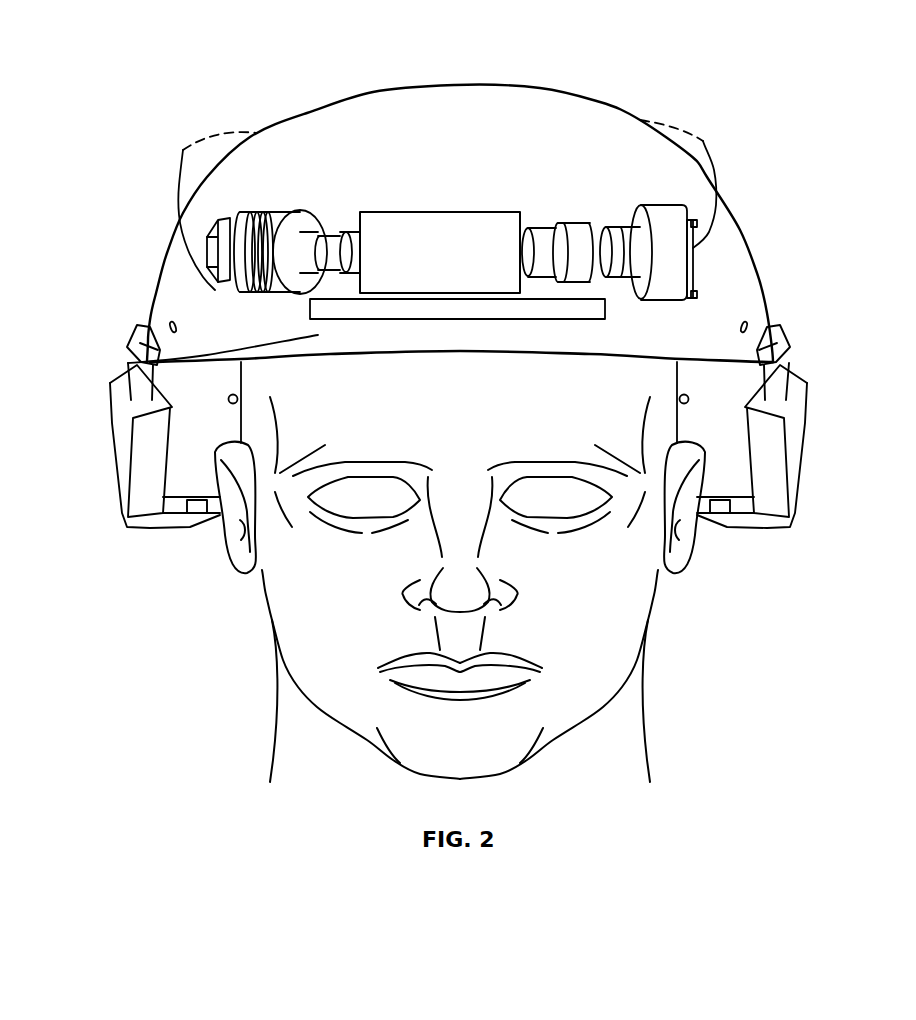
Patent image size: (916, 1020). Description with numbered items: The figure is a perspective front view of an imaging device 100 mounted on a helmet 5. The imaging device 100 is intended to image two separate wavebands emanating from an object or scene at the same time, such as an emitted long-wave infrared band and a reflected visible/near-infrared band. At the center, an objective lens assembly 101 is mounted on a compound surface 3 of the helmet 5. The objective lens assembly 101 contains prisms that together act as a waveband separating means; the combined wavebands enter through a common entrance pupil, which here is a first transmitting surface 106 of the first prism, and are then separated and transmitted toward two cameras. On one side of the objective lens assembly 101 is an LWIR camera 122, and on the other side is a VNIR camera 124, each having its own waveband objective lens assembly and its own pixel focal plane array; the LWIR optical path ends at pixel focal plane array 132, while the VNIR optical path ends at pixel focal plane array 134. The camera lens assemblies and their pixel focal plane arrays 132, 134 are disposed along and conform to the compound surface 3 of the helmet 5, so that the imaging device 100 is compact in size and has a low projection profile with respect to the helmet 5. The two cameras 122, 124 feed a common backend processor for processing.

The imaging device 100 is at (656, 74).
The helmet 5 is at (140, 300).
The compound surface 3 is at (128, 363).
The objective lens assembly 101 is at (460, 200).
The first transmitting surface 106 is at (302, 297).
The LWIR camera 122 is at (340, 212).
The VNIR camera 124 is at (690, 200).
The pixel focal plane array 132 is at (210, 281).
The pixel focal plane array 134 is at (693, 283).